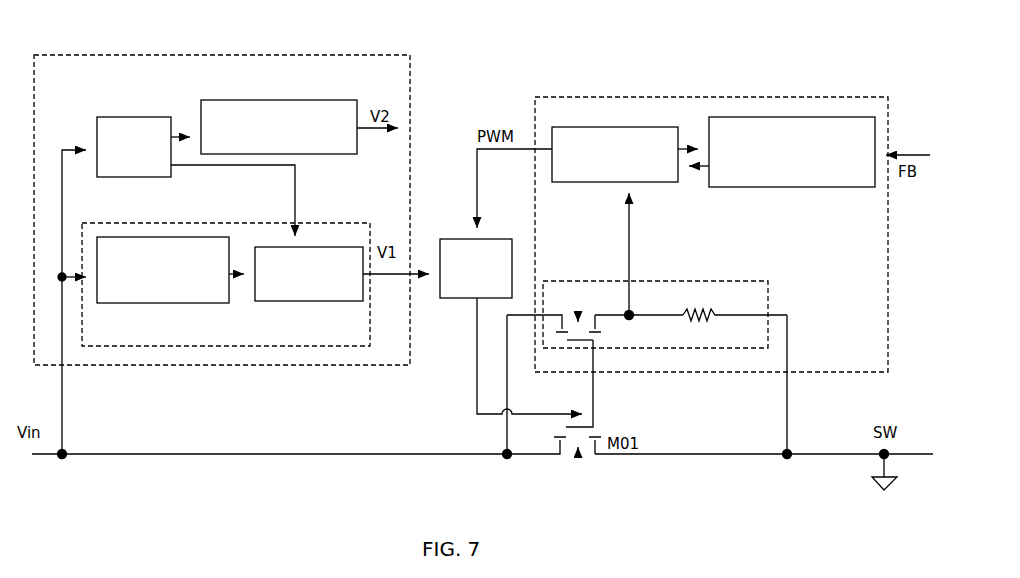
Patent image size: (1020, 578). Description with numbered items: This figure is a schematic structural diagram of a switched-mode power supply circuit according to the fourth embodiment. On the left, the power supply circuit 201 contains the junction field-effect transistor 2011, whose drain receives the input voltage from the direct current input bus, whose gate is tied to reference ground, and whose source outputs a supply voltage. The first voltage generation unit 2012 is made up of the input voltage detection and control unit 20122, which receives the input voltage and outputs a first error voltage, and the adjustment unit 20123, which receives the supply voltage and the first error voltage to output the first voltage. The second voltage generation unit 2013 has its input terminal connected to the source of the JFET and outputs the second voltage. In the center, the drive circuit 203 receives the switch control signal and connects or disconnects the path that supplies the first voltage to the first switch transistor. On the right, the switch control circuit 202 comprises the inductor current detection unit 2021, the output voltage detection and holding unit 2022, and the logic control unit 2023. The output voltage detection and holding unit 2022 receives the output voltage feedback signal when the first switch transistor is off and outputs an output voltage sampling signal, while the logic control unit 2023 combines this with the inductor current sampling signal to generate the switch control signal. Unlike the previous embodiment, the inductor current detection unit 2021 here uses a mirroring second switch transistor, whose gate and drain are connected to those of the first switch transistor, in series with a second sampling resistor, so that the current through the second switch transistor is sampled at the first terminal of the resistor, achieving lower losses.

The power supply circuit 201 is at (410, 118).
The junction field-effect transistor 2011 is at (145, 118).
The first voltage generation unit 2012 is at (205, 223).
The second voltage generation unit 2013 is at (270, 100).
The input voltage detection and control unit 20122 is at (172, 303).
The adjustment unit 20123 is at (327, 301).
The switch control circuit 202 is at (647, 97).
The inductor current detection unit 2021 is at (655, 281).
The output voltage detection and holding unit 2022 is at (737, 187).
The logic control unit 2023 is at (647, 183).
The drive circuit 203 is at (440, 256).